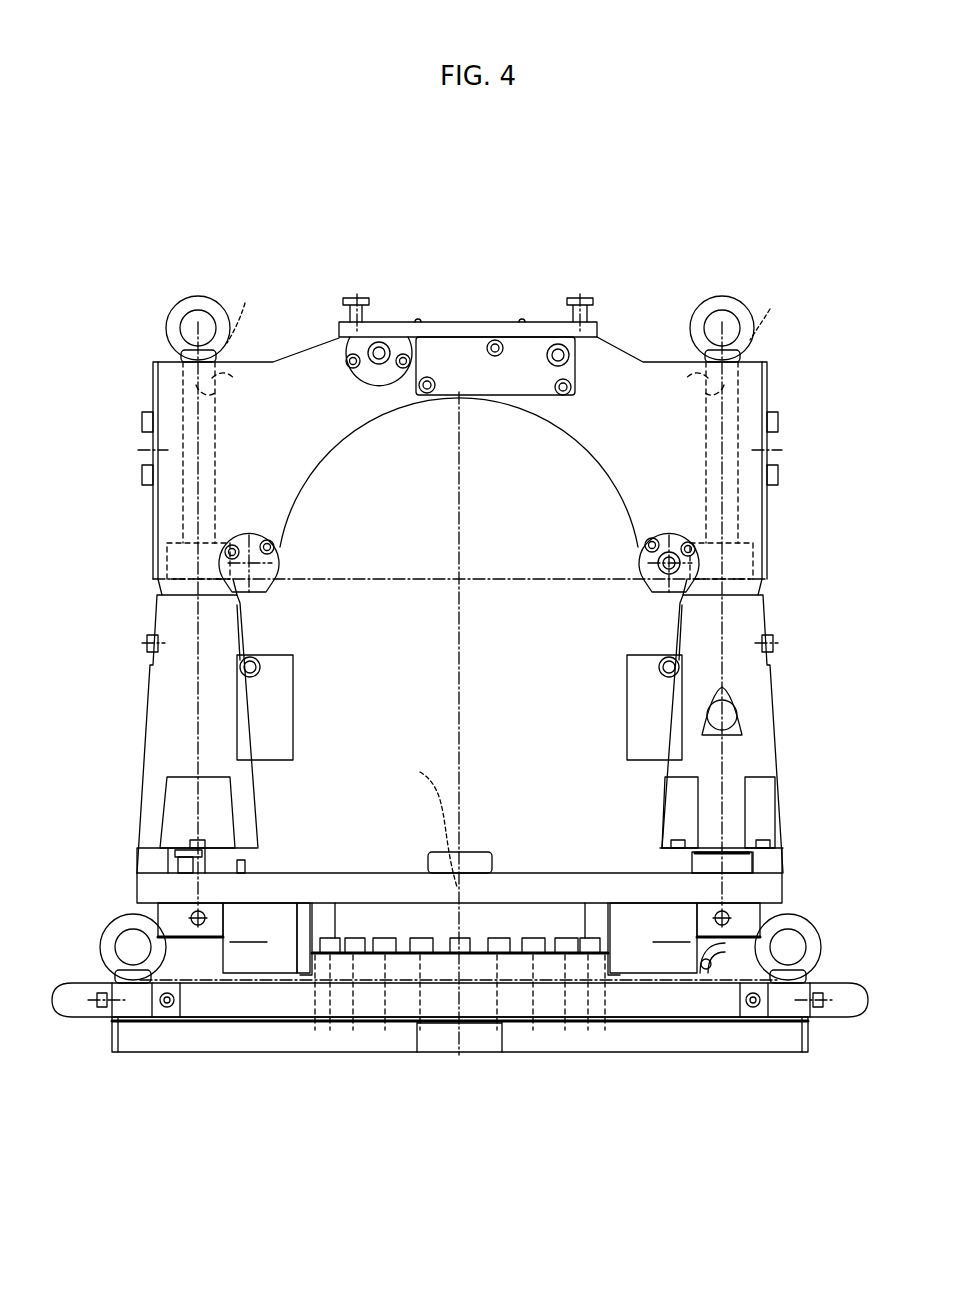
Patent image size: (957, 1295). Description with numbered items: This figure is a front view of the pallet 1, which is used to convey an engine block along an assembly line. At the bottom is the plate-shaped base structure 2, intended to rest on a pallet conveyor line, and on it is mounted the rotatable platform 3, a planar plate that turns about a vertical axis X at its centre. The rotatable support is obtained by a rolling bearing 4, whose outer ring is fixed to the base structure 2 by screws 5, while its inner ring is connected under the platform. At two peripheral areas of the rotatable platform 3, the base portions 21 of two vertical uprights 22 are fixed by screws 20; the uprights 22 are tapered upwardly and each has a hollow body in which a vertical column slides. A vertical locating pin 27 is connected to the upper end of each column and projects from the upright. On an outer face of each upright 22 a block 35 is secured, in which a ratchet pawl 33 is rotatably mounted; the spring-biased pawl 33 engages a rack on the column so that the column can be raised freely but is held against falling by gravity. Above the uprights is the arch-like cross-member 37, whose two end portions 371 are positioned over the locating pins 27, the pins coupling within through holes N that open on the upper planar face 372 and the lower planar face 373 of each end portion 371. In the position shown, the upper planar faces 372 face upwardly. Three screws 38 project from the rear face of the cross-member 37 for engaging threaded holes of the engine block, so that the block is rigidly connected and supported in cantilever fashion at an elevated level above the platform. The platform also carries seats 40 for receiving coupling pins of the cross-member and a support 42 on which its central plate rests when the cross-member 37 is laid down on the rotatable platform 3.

The pallet 1 is at (673, 228).
The base structure 2 is at (88, 1025).
The rotatable platform 3 is at (383, 873).
The rolling bearing 4 is at (398, 965).
The screws 5 is at (555, 943).
The screws 20 is at (193, 838).
The base portions 21 is at (155, 863).
The vertical uprights 22 is at (146, 710).
The vertical locating pin 27 is at (190, 400).
The ratchet pawl 33 is at (252, 656).
The block 35 is at (295, 715).
The arch-like cross-member 37 is at (316, 343).
The screws 38 is at (375, 360).
The seats 40 is at (213, 863).
The support 42 is at (475, 862).
The end portions 371 is at (146, 402).
The upper planar face 372 is at (168, 355).
The lower planar face 373 is at (183, 598).